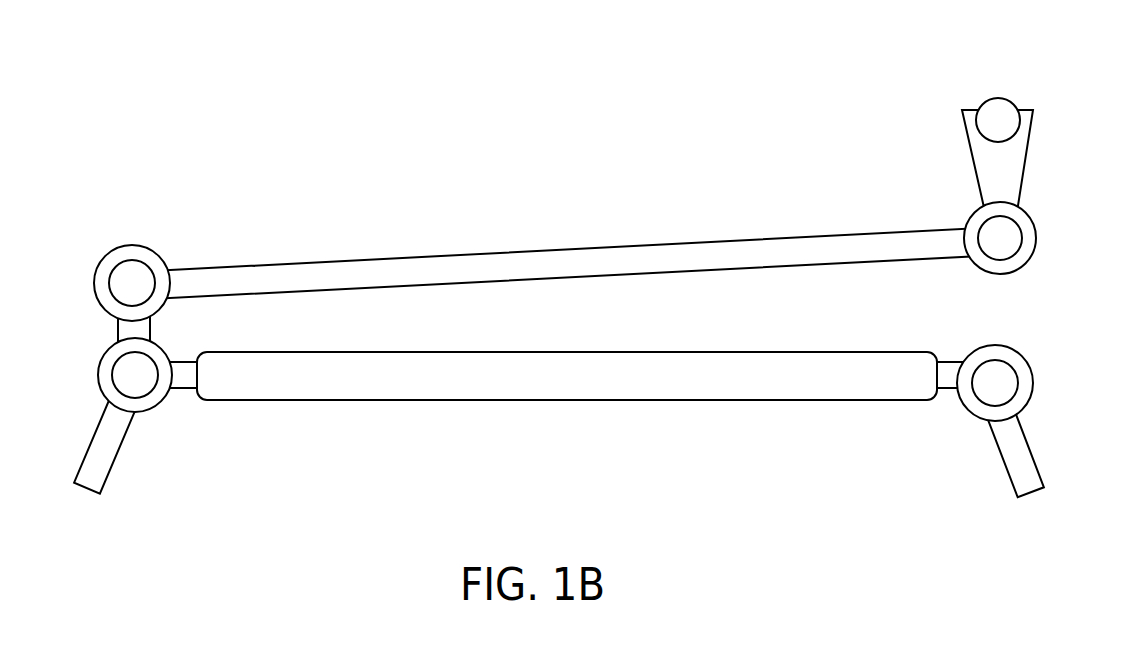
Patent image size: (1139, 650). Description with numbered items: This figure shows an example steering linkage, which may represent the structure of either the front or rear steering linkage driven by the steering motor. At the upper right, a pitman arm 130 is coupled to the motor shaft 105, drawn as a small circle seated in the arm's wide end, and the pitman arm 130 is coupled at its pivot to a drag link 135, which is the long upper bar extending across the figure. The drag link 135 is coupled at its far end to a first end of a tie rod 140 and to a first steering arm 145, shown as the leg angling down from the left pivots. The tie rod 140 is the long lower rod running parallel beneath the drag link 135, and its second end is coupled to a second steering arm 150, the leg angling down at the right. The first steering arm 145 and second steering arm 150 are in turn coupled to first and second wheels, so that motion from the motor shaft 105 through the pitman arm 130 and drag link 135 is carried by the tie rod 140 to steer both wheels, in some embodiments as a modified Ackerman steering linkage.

The motor shaft 105 is at (998, 98).
The pitman arm 130 is at (1022, 175).
The drag link 135 is at (525, 250).
The tie rod 140 is at (508, 402).
The first steering arm 145 is at (115, 452).
The second steering arm 150 is at (1007, 468).